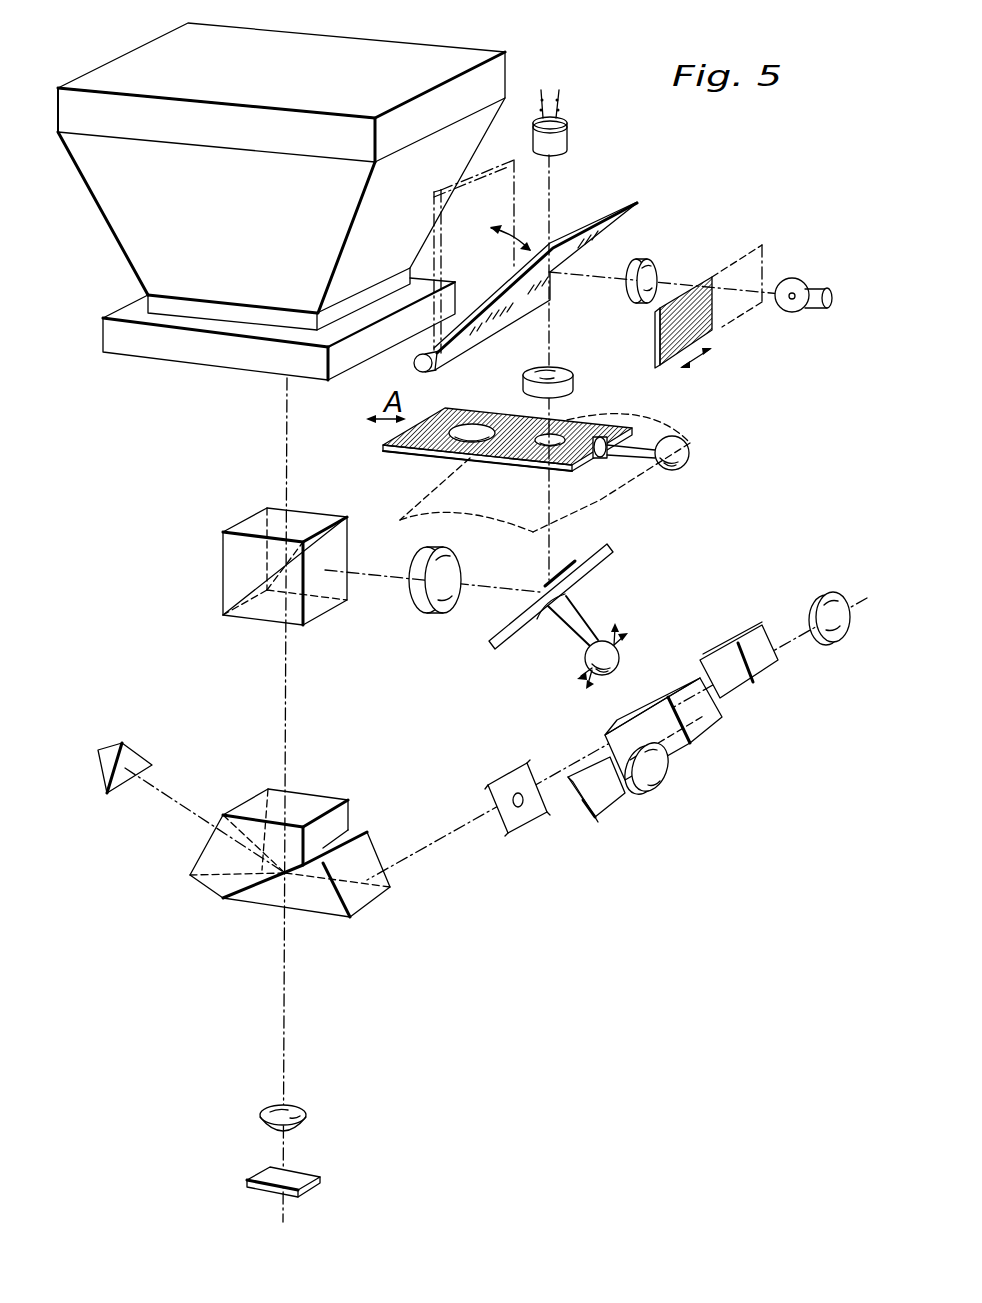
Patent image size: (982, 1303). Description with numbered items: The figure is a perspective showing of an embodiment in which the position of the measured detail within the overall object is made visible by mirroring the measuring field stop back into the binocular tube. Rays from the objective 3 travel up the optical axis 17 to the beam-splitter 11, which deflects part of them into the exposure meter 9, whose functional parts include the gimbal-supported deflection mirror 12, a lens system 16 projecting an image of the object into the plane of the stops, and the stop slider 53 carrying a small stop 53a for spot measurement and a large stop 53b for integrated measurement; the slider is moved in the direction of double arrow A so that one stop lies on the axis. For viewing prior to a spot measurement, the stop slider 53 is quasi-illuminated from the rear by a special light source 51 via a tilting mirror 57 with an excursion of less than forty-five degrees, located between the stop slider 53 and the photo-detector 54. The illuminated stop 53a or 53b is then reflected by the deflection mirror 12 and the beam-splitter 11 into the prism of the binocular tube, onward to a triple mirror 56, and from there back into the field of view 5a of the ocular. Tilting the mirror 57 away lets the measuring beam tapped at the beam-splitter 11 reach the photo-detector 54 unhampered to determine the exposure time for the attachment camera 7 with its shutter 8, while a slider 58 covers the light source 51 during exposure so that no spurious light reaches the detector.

The attachment camera 7 is at (372, 67).
The shutter 8 is at (218, 352).
The photo-detector 54 is at (567, 137).
The tilting mirror 57 is at (620, 220).
The slider 58 is at (706, 315).
The light source 51 is at (794, 281).
The stop slider 53 is at (527, 466).
The stop 53a is at (568, 467).
The stop 53b is at (440, 453).
The exposure meter 9 is at (664, 515).
The beam-splitter 11 is at (242, 572).
The lens system 16 is at (437, 603).
The optical axis 17 is at (548, 560).
The deflection mirror 12 is at (523, 627).
The triple mirror 56 is at (128, 787).
The field of view 5a is at (532, 830).
The objective 3 is at (308, 1115).